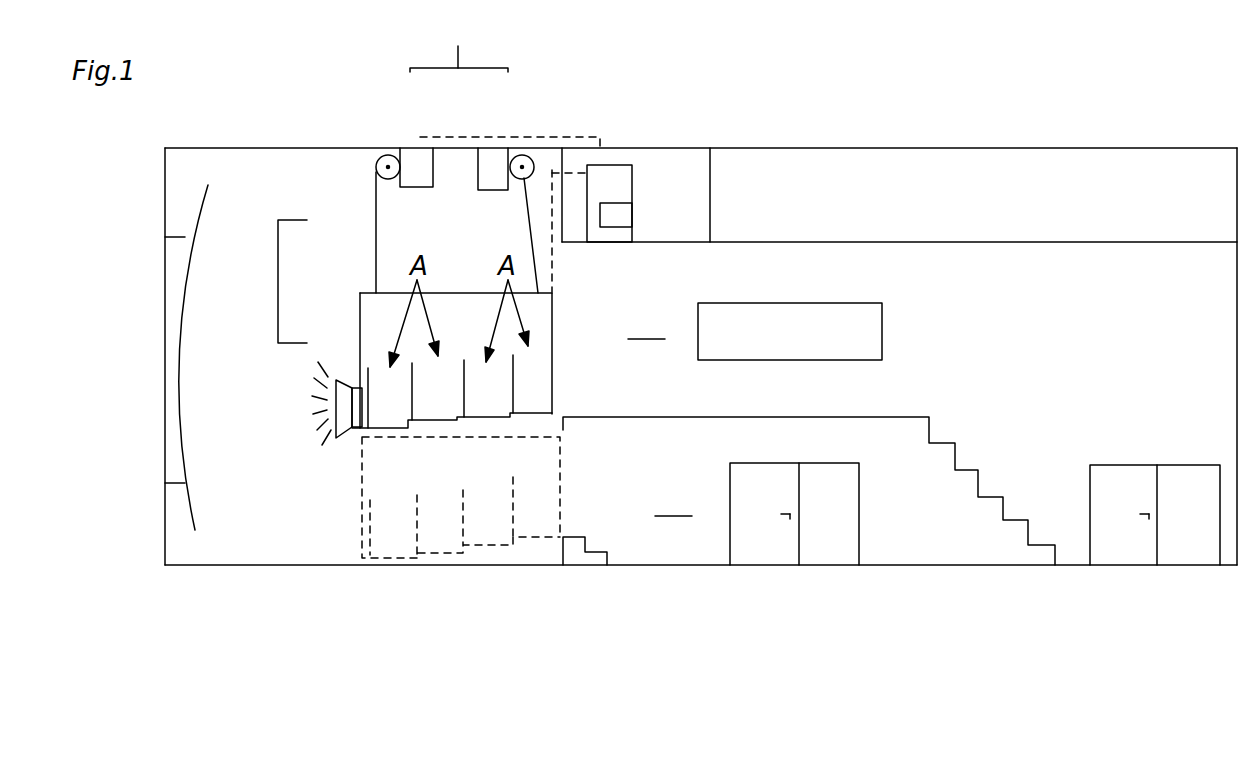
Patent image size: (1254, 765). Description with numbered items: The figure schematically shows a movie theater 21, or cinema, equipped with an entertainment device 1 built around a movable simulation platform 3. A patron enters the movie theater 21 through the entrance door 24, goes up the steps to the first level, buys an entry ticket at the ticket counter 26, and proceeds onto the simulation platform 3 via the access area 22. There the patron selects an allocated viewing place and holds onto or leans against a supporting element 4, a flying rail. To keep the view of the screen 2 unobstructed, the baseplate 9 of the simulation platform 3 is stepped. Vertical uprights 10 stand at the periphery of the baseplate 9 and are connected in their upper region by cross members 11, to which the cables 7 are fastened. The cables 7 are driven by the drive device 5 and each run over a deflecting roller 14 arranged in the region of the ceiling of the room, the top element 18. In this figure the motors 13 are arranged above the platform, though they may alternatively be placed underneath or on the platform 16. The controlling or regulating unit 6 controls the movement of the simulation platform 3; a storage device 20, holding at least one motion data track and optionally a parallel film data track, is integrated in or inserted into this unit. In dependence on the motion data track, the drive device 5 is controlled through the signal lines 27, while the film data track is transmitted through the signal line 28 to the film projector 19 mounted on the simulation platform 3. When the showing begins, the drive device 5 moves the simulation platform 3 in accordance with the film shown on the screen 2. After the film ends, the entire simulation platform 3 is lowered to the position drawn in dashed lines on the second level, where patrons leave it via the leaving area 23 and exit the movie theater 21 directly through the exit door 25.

The entertainment device 1 is at (440, 153).
The screen 2 is at (180, 307).
The simulation platform 3 is at (278, 283).
The supporting element 4 is at (464, 390).
The drive device 5 is at (454, 102).
The controlling or regulating unit 6 is at (618, 163).
The cables 7 is at (374, 275).
The baseplate 9 is at (395, 425).
The vertical uprights 10 is at (447, 327).
The cross members 11 is at (383, 295).
The motors 13 is at (408, 158).
The deflecting roller 14 is at (385, 160).
The platform 16 is at (215, 567).
The top element 18 is at (193, 147).
The film projector 19 is at (350, 422).
The storage device 20 is at (611, 216).
The movie theater 21 is at (985, 148).
The access area 22 is at (562, 328).
The leaving area 23 is at (563, 503).
The entrance door 24 is at (1125, 547).
The exit door 25 is at (777, 553).
The ticket counter 26 is at (823, 333).
The signal lines 27 is at (543, 136).
The signal line 28 is at (567, 177).